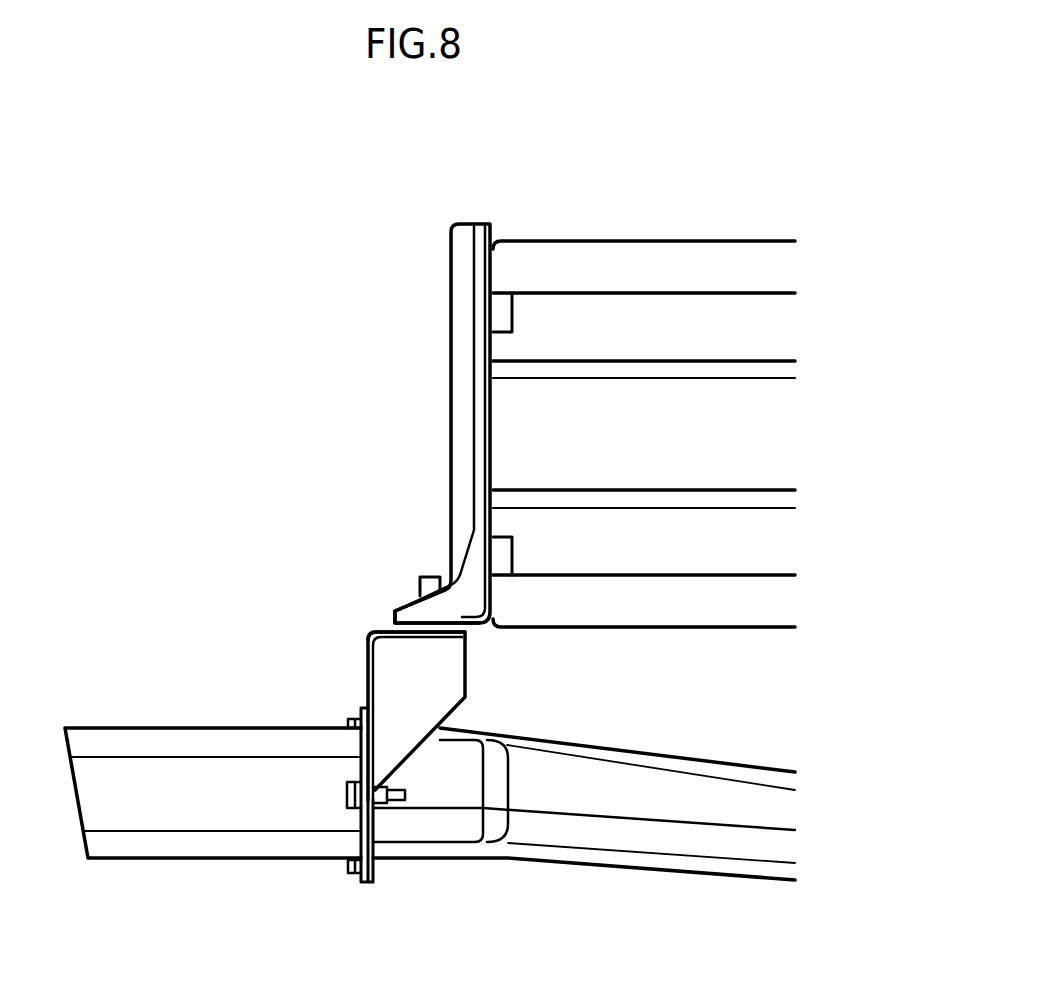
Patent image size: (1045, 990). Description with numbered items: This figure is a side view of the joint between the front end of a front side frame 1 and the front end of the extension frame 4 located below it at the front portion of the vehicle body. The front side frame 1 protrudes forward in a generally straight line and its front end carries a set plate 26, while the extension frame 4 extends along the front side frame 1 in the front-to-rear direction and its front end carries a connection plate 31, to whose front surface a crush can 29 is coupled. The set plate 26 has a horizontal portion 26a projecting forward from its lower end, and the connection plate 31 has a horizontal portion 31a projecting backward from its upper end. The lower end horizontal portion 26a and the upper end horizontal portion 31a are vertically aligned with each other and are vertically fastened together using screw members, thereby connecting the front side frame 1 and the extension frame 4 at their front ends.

The front side frame 1 is at (665, 240).
The extension frame 4 is at (607, 867).
The set plate 26 is at (450, 250).
The horizontal portion 26a is at (473, 630).
The crush can 29 is at (150, 728).
The connection plate 31 is at (368, 652).
The horizontal portion 31a is at (387, 625).